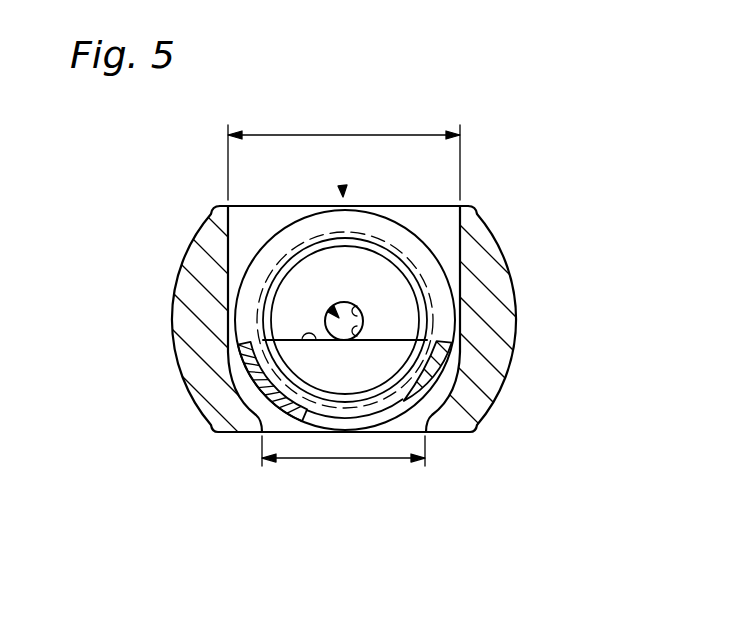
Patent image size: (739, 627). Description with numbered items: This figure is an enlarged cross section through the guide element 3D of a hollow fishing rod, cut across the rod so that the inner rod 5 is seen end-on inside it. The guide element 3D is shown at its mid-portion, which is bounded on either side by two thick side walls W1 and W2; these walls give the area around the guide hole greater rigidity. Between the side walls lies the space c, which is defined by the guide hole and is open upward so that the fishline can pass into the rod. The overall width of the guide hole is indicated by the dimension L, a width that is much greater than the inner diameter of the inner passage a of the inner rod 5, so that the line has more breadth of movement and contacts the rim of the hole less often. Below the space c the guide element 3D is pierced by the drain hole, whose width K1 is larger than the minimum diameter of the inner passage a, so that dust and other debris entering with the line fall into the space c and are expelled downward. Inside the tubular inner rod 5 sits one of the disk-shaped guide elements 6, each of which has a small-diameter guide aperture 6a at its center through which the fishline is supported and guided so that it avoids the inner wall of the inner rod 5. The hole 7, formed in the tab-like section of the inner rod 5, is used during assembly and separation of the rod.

The guide element 3D is at (183, 365).
The inner rod 5 is at (415, 247).
The guide elements 6 is at (347, 302).
The guide aperture 6a is at (350, 341).
The hole 7 is at (362, 420).
The inner passage a is at (336, 313).
The space c is at (342, 192).
The width of guide hole L is at (400, 135).
The width of drain hole K1 is at (396, 458).
The side wall W1 is at (208, 230).
The side wall W2 is at (477, 230).